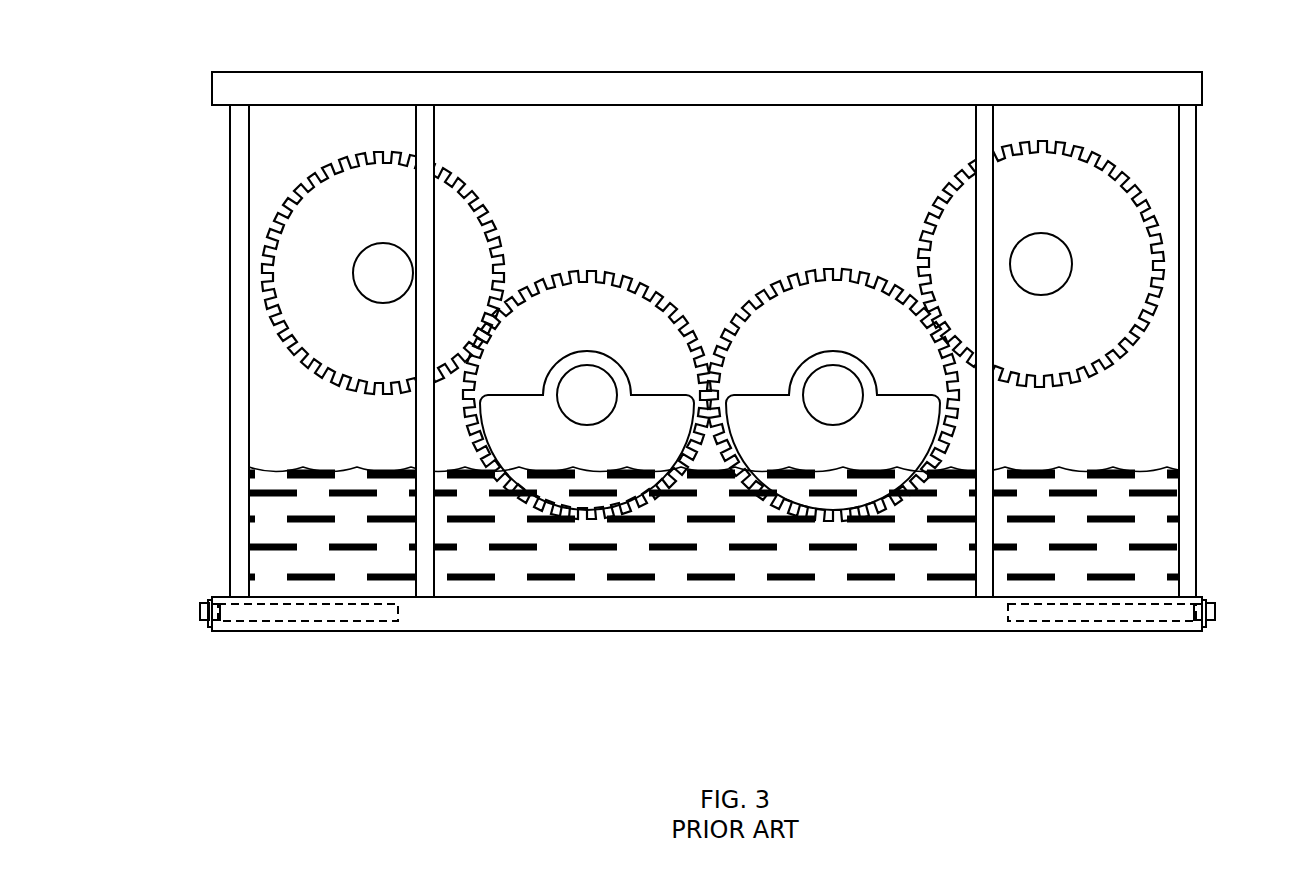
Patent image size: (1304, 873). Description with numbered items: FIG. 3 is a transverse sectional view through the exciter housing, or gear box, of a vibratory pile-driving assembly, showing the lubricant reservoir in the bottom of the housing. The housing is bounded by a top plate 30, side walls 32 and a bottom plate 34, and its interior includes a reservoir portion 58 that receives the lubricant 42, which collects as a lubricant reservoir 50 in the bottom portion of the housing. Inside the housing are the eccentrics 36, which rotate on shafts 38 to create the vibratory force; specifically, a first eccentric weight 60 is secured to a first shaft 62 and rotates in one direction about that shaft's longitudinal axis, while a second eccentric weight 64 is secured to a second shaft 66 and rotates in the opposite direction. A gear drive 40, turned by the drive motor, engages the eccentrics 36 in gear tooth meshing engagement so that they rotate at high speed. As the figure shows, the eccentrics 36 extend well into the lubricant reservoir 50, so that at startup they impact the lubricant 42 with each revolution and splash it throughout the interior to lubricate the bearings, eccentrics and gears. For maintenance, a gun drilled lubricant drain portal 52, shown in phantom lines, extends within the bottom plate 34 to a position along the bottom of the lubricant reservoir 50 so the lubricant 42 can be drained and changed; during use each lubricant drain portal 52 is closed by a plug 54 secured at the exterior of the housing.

The top plate 30 is at (683, 93).
The side walls 32 is at (290, 150).
The bottom plate 34 is at (818, 608).
The eccentrics 36 is at (711, 369).
The shafts 38 is at (587, 415).
The gear drive 40 is at (462, 232).
The lubricant 42 is at (265, 517).
The lubricant reservoir 50 is at (383, 458).
The lubricant drain portal 52 is at (313, 622).
The plugs 54 is at (195, 612).
The reservoir portion 58 is at (535, 550).
The first eccentric weight 60 is at (587, 369).
The first shaft 62 is at (590, 385).
The second eccentric weight 64 is at (833, 369).
The second shaft 66 is at (838, 385).